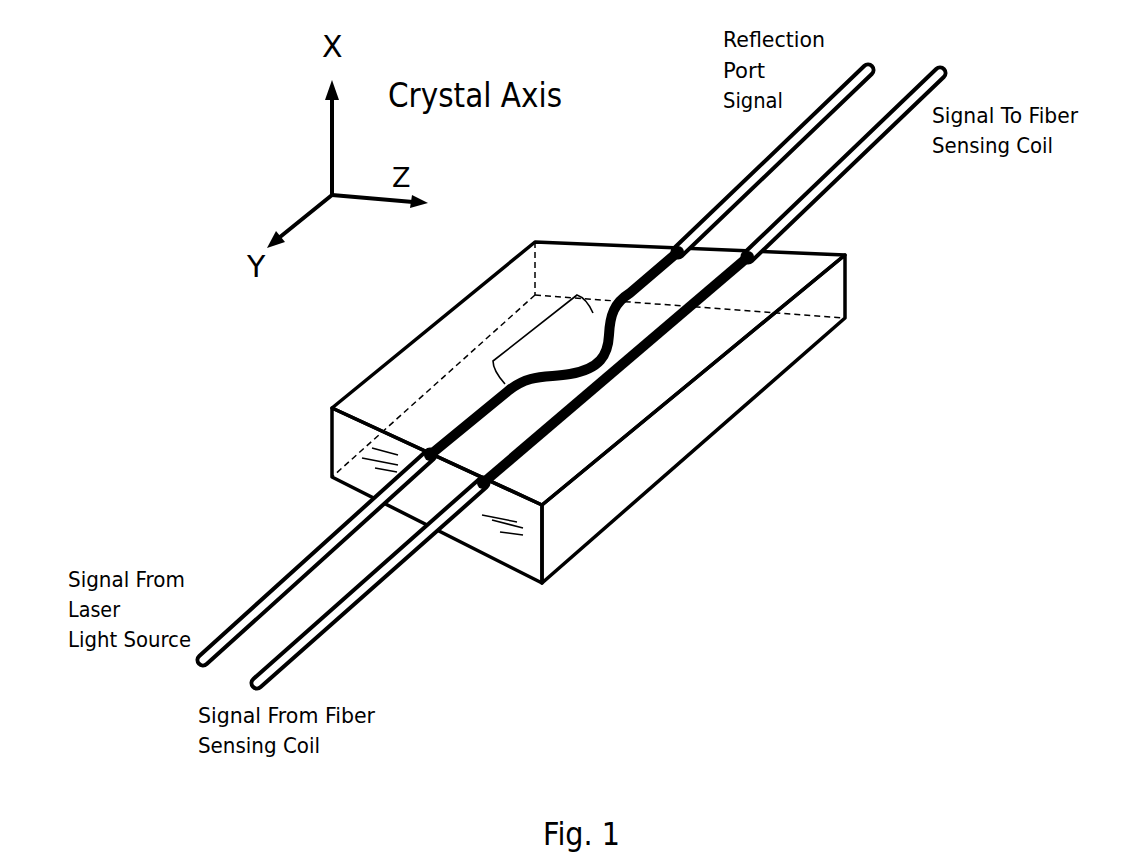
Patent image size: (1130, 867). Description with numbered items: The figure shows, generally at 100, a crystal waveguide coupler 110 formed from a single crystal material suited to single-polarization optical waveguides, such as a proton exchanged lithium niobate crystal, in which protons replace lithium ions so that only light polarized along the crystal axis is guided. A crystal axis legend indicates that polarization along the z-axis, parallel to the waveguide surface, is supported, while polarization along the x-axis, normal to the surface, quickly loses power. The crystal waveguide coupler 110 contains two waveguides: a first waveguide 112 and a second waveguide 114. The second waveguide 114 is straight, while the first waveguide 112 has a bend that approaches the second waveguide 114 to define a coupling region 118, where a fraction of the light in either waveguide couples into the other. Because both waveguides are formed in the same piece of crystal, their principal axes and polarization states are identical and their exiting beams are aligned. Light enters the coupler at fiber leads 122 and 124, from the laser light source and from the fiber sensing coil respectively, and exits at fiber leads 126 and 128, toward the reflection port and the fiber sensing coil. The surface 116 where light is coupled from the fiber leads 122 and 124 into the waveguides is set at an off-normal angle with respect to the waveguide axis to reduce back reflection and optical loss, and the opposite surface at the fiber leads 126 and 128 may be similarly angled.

The crystal waveguide coupler diagram 100 is at (1000, 288).
The crystal waveguide coupler 110 is at (580, 240).
The first waveguide 112 is at (467, 417).
The second waveguide 114 is at (543, 437).
The surface 116 is at (500, 548).
The coupling region 118 is at (537, 323).
The fiber lead 122 is at (333, 535).
The fiber lead 124 is at (398, 573).
The fiber lead 126 is at (755, 163).
The fiber lead 128 is at (862, 163).